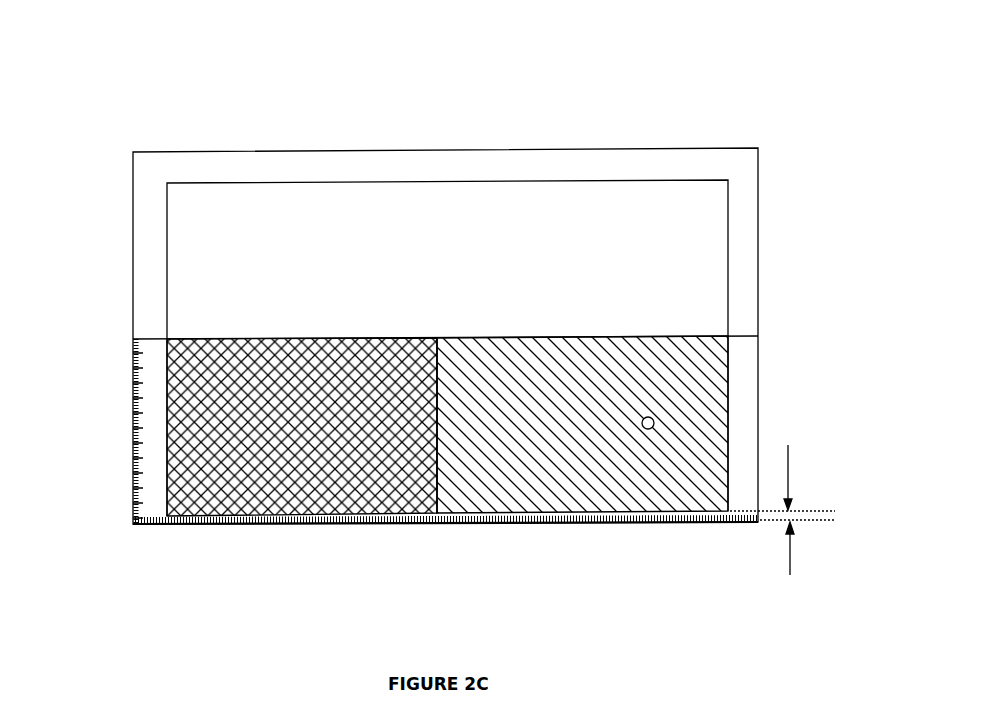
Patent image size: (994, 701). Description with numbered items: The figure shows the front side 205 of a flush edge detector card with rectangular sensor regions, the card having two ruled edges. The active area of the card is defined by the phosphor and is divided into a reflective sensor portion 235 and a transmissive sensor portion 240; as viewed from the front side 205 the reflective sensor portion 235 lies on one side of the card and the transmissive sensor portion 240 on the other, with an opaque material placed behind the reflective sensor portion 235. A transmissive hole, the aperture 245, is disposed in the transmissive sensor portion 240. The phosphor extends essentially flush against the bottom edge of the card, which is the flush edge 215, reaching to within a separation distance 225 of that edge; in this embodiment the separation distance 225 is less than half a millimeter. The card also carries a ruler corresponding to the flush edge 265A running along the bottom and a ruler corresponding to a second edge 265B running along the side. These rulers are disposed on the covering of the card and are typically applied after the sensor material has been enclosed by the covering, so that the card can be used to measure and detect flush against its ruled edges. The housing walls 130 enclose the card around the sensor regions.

The front side 205 is at (439, 99).
The housing wall 130 is at (292, 167).
The reflective sensor portion 235 is at (225, 450).
The transmissive sensor portion 240 is at (700, 373).
The aperture 245 is at (655, 423).
The ruler corresponding to a second edge 265B is at (135, 388).
The ruler corresponding to the flush edge 265A is at (605, 525).
The flush edge 215 is at (520, 525).
The separation distance 225 is at (835, 512).